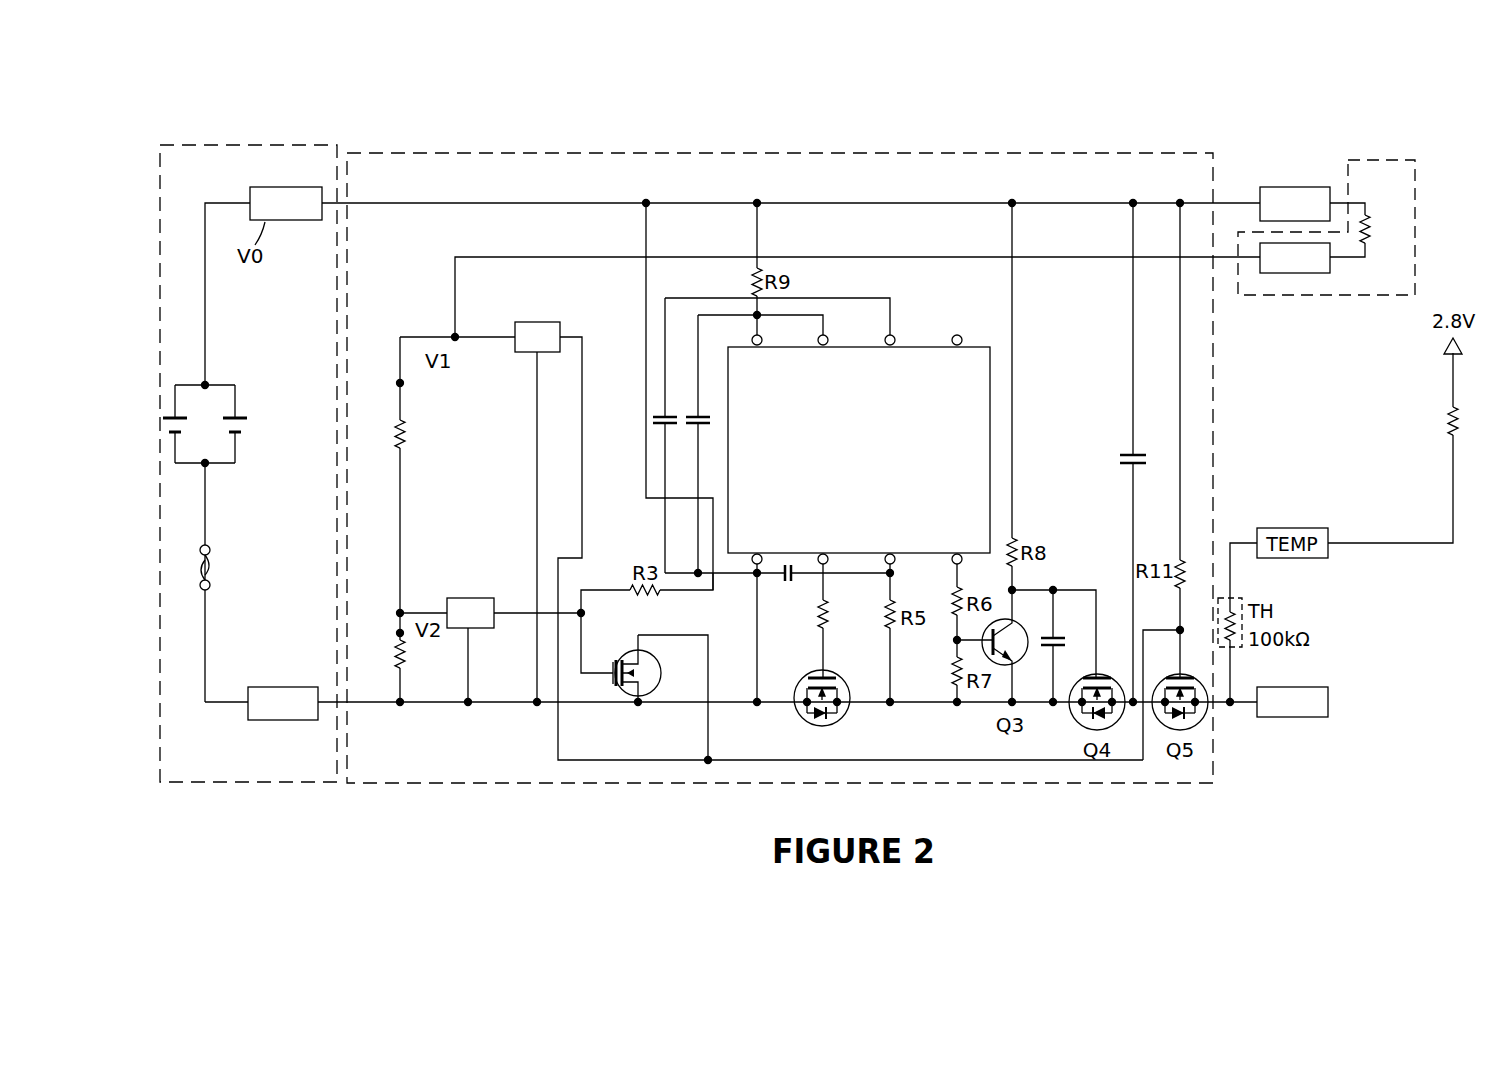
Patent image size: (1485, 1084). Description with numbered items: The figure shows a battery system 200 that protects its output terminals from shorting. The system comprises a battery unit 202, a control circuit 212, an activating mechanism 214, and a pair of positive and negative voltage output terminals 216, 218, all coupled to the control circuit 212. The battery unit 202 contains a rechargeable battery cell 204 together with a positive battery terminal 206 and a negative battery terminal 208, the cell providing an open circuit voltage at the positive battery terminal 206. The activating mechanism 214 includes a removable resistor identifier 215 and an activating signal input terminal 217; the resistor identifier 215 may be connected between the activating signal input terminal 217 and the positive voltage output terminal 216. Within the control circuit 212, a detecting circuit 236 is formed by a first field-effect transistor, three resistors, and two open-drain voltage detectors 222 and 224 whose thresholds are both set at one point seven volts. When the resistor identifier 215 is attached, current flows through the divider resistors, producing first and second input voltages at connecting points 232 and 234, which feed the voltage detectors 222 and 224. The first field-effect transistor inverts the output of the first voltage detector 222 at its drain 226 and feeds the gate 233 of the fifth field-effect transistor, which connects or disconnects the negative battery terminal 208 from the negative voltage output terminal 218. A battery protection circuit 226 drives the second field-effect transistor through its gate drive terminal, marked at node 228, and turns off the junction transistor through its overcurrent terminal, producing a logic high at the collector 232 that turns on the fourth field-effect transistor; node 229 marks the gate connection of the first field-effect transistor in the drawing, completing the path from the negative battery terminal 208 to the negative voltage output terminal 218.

The battery system 200 is at (1376, 112).
The battery unit 202 is at (288, 144).
The rechargeable battery cell 204 is at (214, 385).
The positive battery terminal 206 is at (290, 187).
The negative battery terminal 208 is at (272, 687).
The control circuit 212 is at (1106, 152).
The activating mechanism 214 is at (1416, 205).
The removable resistor identifier 215 is at (1368, 215).
The positive voltage output terminal 216 is at (1302, 187).
The activating signal input terminal 217 is at (1330, 268).
The negative voltage output terminal 218 is at (1330, 697).
The open-drain type voltage detector 222 is at (560, 322).
The open-drain type voltage detector 224 is at (493, 606).
The battery protection circuit / drain of Q1 226 is at (652, 633).
The discharge control transistor Q2 228 is at (828, 638).
The gate node of transistor Q1 229 is at (588, 672).
The connecting point / collector of Q3 232 is at (400, 386).
The gate of Q5 233 is at (1177, 629).
The connecting point 234 is at (402, 636).
The detecting circuit 236 is at (480, 483).